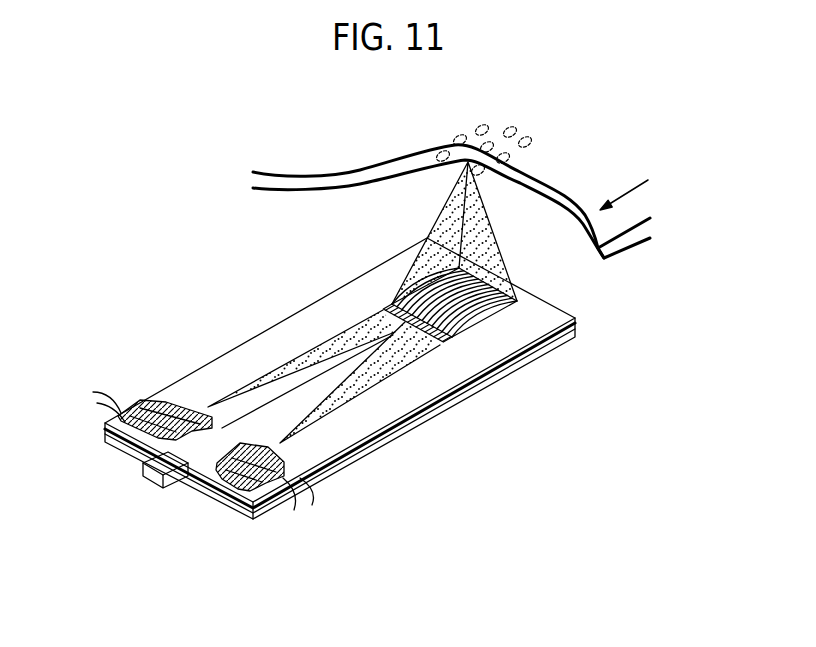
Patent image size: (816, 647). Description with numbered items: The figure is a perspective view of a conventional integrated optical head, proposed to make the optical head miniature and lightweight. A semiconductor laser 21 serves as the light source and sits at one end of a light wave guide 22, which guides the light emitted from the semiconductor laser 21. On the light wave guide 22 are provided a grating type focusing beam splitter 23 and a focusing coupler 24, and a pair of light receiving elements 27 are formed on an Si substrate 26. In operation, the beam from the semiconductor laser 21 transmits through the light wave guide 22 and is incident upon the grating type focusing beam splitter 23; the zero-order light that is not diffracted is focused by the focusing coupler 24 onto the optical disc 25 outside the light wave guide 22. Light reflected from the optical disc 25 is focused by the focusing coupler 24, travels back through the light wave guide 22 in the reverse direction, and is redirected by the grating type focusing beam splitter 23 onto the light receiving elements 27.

The semiconductor laser 21 is at (152, 488).
The light wave guide 22 is at (500, 365).
The grating type focusing beam splitter 23 is at (367, 297).
The focusing coupler 24 is at (495, 246).
The optical disc 25 is at (299, 182).
The Si substrate 26 is at (416, 421).
The light receiving elements 27 is at (284, 452).